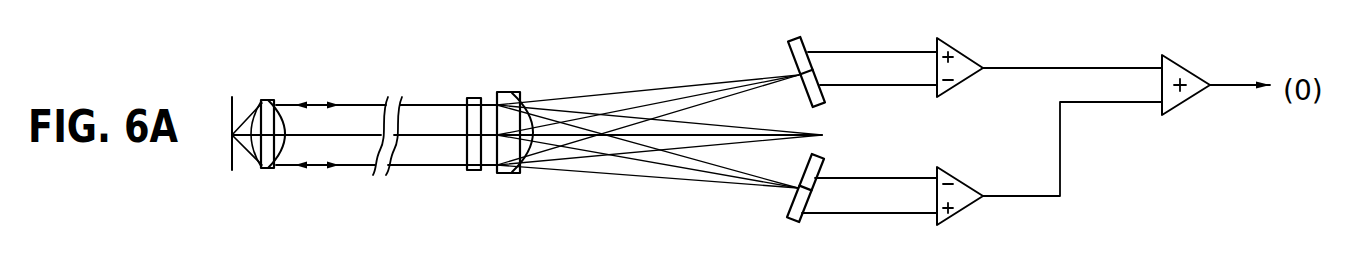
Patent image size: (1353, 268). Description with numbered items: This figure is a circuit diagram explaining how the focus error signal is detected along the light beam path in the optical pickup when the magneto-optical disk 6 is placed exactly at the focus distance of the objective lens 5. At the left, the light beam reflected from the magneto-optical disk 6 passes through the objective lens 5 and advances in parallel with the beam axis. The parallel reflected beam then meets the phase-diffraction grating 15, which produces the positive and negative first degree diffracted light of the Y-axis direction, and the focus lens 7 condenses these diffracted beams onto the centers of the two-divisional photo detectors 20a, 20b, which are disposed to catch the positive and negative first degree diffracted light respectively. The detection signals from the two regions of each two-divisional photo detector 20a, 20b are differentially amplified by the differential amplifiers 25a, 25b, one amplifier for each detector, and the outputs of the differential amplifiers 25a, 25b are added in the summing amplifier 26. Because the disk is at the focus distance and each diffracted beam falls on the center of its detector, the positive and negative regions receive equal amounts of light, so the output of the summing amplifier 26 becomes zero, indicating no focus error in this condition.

The objective lens 5 is at (268, 168).
The magneto-optical disk 6 is at (232, 170).
The focus lens 7 is at (510, 173).
The phase-diffraction grating 15 is at (475, 170).
The two-divisional photo detector 20a is at (787, 44).
The two-divisional photo detector 20b is at (787, 216).
The differential amplifier 25a is at (968, 80).
The differential amplifier 25b is at (968, 208).
The summing amplifier 26 is at (1193, 100).